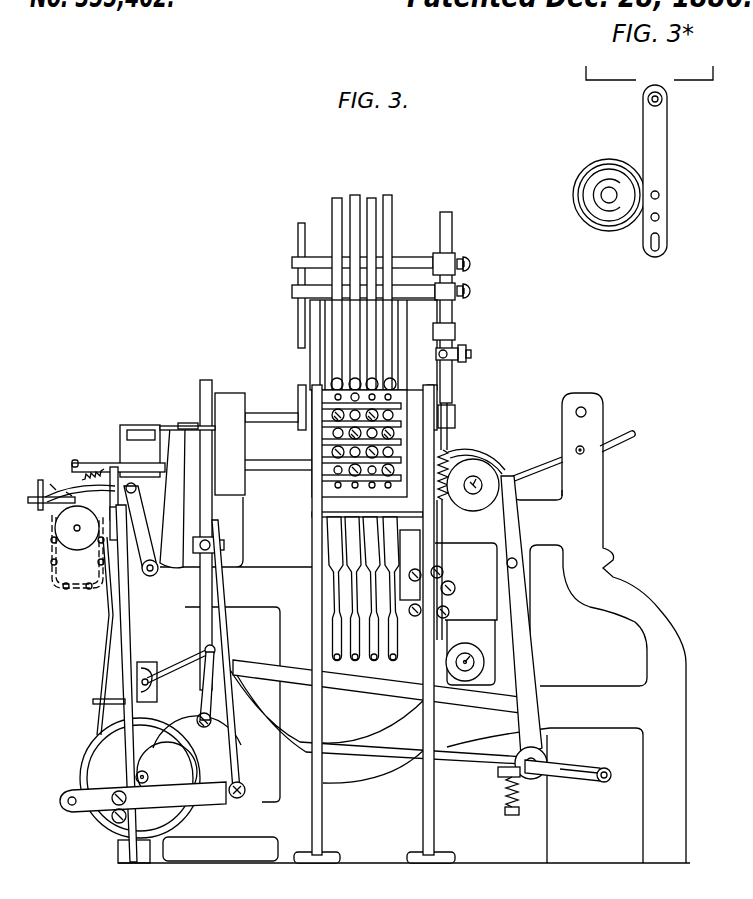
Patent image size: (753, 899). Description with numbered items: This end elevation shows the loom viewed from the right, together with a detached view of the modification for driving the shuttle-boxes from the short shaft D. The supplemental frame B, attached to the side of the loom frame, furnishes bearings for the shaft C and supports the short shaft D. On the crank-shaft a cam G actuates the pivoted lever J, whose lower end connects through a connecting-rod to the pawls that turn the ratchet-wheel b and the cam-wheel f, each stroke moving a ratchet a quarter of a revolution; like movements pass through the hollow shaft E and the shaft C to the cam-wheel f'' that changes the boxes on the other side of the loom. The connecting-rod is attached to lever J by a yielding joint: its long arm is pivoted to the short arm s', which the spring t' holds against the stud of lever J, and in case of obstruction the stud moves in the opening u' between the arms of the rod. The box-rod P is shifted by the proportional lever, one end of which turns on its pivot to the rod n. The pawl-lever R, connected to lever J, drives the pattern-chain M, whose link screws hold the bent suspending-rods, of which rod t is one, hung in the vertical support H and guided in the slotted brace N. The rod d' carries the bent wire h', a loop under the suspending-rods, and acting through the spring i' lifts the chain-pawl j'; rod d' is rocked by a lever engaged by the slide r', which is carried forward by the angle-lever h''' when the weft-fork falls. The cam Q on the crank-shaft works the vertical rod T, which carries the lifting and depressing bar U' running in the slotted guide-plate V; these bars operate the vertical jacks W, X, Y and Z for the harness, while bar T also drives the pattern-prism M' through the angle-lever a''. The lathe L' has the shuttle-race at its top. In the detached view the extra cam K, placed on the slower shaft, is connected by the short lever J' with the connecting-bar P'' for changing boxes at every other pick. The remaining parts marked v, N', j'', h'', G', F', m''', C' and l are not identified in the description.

In FIG. 3, the slotted guide-plate V is at (298, 276).
In FIG. 3, the vertical jack W is at (338, 285).
In FIG. 3, the vertical jack X is at (355, 284).
In FIG. 3, the vertical jack Y is at (372, 284).
In FIG. 3, the vertical jack Z is at (389, 284).
In FIG. 3, the vertical rod T is at (446, 310).
In FIG. 3, the cross bar v is at (410, 256).
In FIG. 3, the lifting and depressing bar U' is at (427, 322).
In FIG. 3, the angle-lever a'' is at (467, 343).
In FIG. 3, the guide frame N' is at (357, 345).
In FIG. 3, the pattern wheel or prism M' is at (341, 445).
In FIG. 3, the lathe L' is at (230, 444).
In FIG. 3, the box-rod P is at (208, 535).
In FIG. 3, the pawl-lever R is at (141, 529).
In FIG. 3, the vertical support H is at (130, 683).
In FIG. 3, the slotted brace N is at (59, 508).
In FIG. 3, the pattern-chain M is at (71, 552).
In FIG. 3, the bent suspending-rod t is at (62, 607).
In FIG. 3, the chain-pawl j' is at (45, 469).
In FIG. 3, the bent wire h' is at (62, 477).
In FIG. 3, the spring i' is at (88, 462).
In FIG. 3, the rod d' is at (118, 459).
In FIG. 3, the slide r' is at (141, 443).
In FIG. 3, the bar j'' is at (184, 412).
In FIG. 3, the arm h'' is at (187, 417).
In FIG. 3, the angle-lever h''' is at (309, 552).
In FIG. 3, the cam G is at (477, 469).
In FIG. 3, the cam Q is at (501, 476).
In FIG. 3, the rod G' is at (534, 470).
In FIG. 3, the hollow shaft E is at (600, 628).
In FIG. 3, the belt F' is at (438, 591).
In FIG. 3, the cam-lever J is at (521, 616).
In FIG. 3, the cam-wheel f'' is at (508, 558).
In FIG. 3, the short shaft D is at (474, 648).
In FIG. 3, the connecting-bar P'' is at (384, 687).
In FIG. 3, the spring t' is at (531, 776).
In FIG. 3, the short arm s' is at (568, 781).
In FIG. 3, the opening u' is at (579, 759).
In FIG. 3, the spring bolt m''' is at (514, 801).
In FIG. 3, the supplemental frame B is at (125, 689).
In FIG. 3, the ratchet-wheel b is at (181, 668).
In FIG. 3, the connecting rod C' is at (200, 689).
In FIG. 3, the shaft C is at (160, 777).
In FIG. 3, the cam-wheel f is at (167, 772).
In FIG. 3, the lever l is at (143, 802).
In FIG. 3, the rod n is at (228, 659).
The extra cam K is at (609, 176).
The short lever J' is at (655, 171).